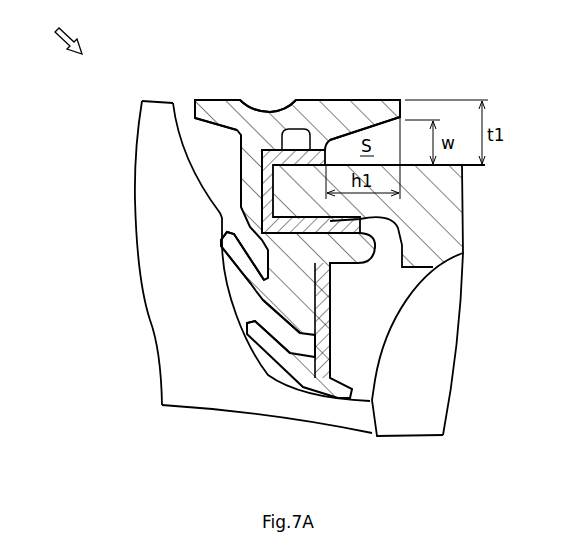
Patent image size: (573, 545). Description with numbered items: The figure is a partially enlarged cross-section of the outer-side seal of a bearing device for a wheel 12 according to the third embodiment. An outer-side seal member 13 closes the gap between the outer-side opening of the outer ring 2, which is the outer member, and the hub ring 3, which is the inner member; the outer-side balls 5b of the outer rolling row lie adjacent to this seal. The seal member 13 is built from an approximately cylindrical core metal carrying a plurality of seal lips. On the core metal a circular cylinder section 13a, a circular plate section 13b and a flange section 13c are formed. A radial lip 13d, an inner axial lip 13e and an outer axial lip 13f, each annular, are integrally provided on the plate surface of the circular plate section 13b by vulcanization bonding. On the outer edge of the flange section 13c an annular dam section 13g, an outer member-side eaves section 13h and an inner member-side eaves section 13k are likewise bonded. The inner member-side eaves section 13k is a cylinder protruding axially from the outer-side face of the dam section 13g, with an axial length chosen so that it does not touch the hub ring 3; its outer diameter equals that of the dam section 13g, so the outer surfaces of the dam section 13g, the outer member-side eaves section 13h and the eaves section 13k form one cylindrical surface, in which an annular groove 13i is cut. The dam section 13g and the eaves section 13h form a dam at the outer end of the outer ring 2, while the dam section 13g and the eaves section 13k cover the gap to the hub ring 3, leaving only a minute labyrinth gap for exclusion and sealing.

The bearing device for a wheel 12 is at (56, 33).
The outer-side seal member 13 is at (190, 97).
The inner member-side eaves section 13k is at (222, 108).
The groove 13i is at (278, 110).
The outer member-side eaves section 13h is at (342, 110).
The dam section 13g is at (240, 140).
The flange section 13c is at (250, 178).
The circular cylinder section 13a is at (222, 238).
The outer axial lip 13f is at (258, 262).
The circular plate section 13b is at (245, 283).
The inner axial lip 13e is at (247, 326).
The radial lip 13d is at (327, 396).
The outer ring 2 is at (462, 210).
The hub ring 3 is at (188, 393).
The outer-side balls 5b is at (443, 400).